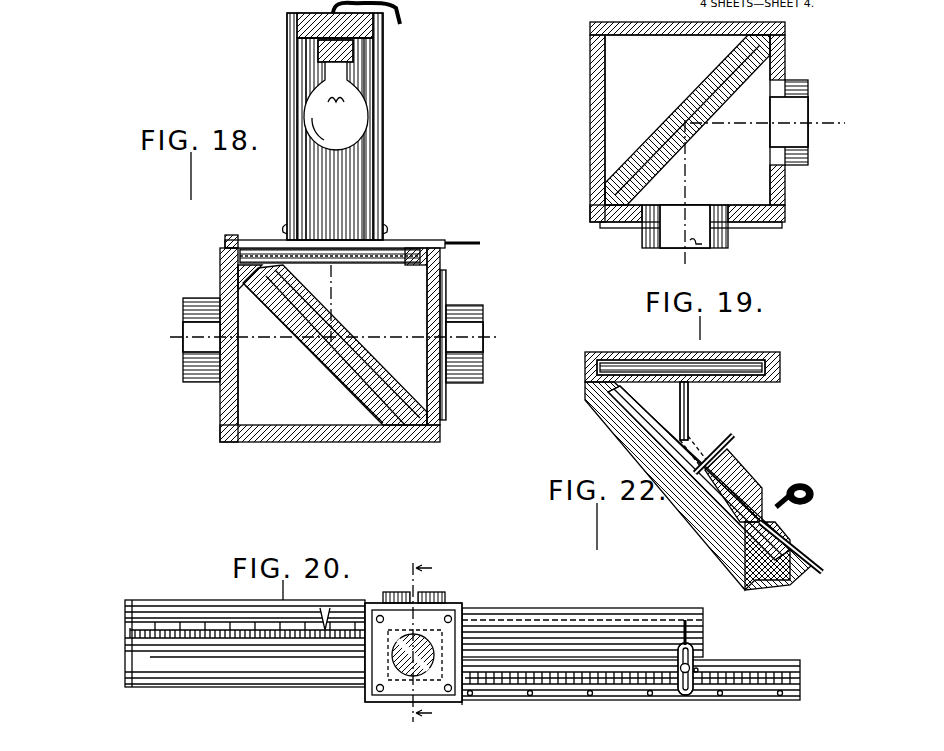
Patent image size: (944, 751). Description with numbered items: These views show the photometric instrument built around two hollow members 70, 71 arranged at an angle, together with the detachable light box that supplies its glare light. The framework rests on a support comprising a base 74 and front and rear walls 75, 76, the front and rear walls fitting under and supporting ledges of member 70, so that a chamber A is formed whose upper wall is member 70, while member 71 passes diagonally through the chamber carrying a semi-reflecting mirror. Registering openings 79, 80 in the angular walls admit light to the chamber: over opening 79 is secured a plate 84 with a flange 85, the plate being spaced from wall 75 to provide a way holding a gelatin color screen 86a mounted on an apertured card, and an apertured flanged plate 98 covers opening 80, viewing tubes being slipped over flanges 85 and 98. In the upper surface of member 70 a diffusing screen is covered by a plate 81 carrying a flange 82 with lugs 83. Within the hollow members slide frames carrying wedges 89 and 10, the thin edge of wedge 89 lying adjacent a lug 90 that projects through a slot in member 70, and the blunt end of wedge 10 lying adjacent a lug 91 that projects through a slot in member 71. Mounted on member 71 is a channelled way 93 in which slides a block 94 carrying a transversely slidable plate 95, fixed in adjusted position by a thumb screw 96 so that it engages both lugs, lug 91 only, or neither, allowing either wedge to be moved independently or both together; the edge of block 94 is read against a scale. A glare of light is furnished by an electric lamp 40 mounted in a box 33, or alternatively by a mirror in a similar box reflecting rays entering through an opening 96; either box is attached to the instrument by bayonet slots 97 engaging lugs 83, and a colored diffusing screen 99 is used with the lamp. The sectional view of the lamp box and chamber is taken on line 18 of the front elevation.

In FIG. 22, the wedge 10 is at (646, 450).
In FIG. 20, the wedge 10 is at (458, 703).
In FIG. 20, the section line 18 is at (435, 641).
In FIG. 18, the box 33 is at (374, 158).
In FIG. 19, the box 33 is at (688, 25).
In FIG. 18, the electric lamp 40 is at (368, 113).
In FIG. 19, the electric lamp 40 is at (698, 105).
In FIG. 22, the hollow member 70 is at (780, 358).
In FIG. 20, the hollow member 70 is at (570, 611).
In FIG. 22, the hollow member 71 is at (622, 424).
In FIG. 20, the hollow member 71 is at (192, 670).
In FIG. 18, the base 74 is at (320, 441).
In FIG. 18, the front wall 75 is at (441, 433).
In FIG. 20, the front wall 75 is at (365, 698).
In FIG. 18, the rear wall 76 is at (222, 430).
In FIG. 18, the opening 79 is at (433, 384).
In FIG. 18, the opening 80 is at (226, 378).
In FIG. 18, the plate 81 is at (405, 241).
In FIG. 20, the flange 82 is at (408, 594).
In FIG. 18, the lugs 83 is at (285, 226).
In FIG. 20, the lugs 83 is at (421, 595).
In FIG. 18, the plate 84 is at (446, 296).
In FIG. 20, the plate 84 is at (395, 700).
In FIG. 18, the flange 85 is at (470, 311).
In FIG. 18, the color screen 86a is at (440, 266).
In FIG. 22, the wedge 89 is at (735, 365).
In FIG. 22, the lug 90 is at (688, 405).
In FIG. 20, the lug 90 is at (693, 637).
In FIG. 22, the lug 91 is at (729, 440).
In FIG. 20, the channelled way 93 is at (803, 675).
In FIG. 22, the block 94 is at (778, 528).
In FIG. 22, the plate 95 is at (742, 484).
In FIG. 20, the plate 95 is at (676, 654).
In FIG. 19, the thumb screw 96 is at (797, 82).
In FIG. 22, the thumb screw 96 is at (812, 500).
In FIG. 20, the thumb screw 96 is at (697, 668).
In FIG. 19, the bayonet slots 97 is at (697, 248).
In FIG. 18, the apertured flanged plate 98 is at (216, 300).
In FIG. 18, the colored diffusing screen 99 is at (450, 244).
In FIG. 18, the chamber A is at (314, 354).